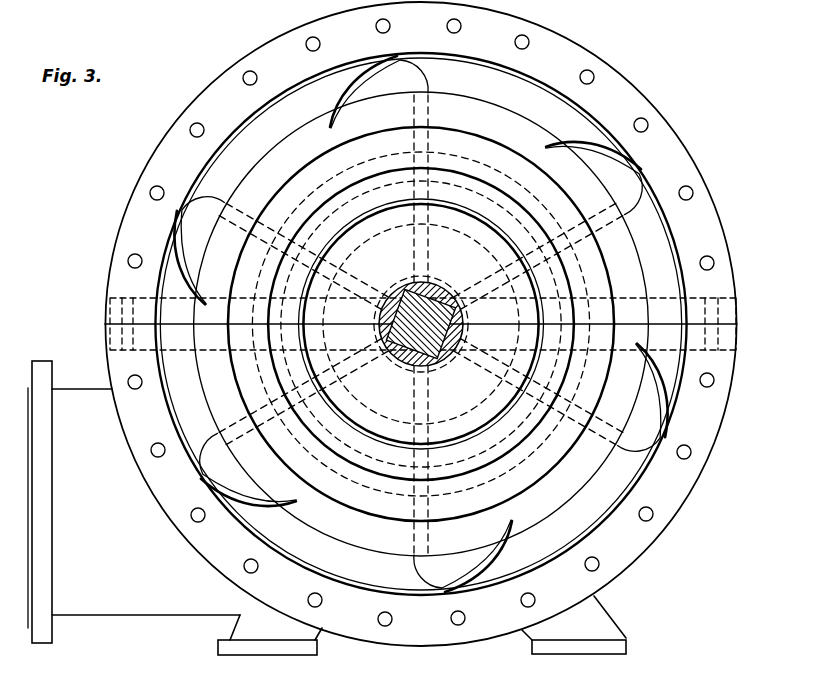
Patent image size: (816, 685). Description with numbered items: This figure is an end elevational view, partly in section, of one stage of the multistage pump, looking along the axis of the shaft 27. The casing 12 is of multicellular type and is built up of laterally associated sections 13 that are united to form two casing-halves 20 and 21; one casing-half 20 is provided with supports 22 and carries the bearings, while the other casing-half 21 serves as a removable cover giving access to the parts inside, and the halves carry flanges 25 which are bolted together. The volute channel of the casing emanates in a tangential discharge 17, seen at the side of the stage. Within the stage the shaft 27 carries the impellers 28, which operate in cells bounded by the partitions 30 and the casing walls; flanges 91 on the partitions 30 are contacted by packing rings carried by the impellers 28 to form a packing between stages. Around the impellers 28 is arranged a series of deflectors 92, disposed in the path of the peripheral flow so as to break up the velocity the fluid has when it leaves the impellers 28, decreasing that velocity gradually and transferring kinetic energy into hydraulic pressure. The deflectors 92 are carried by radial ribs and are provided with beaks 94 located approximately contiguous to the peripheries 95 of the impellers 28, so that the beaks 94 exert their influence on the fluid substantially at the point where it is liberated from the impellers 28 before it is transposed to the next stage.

The casing 12 is at (420, 324).
The sections 13 is at (564, 52).
The tangential discharge 17 is at (134, 502).
The casing-half 20 is at (114, 366).
The casing-half 21 is at (117, 280).
The supports 22 is at (594, 628).
The flanges 25 is at (727, 343).
The shaft 27 is at (405, 349).
The impellers 28 is at (273, 259).
The partitions 30 is at (580, 470).
The flanges 91 is at (486, 201).
The deflectors 92 is at (423, 148).
The beaks 94 is at (338, 118).
The peripheries 95 is at (311, 192).